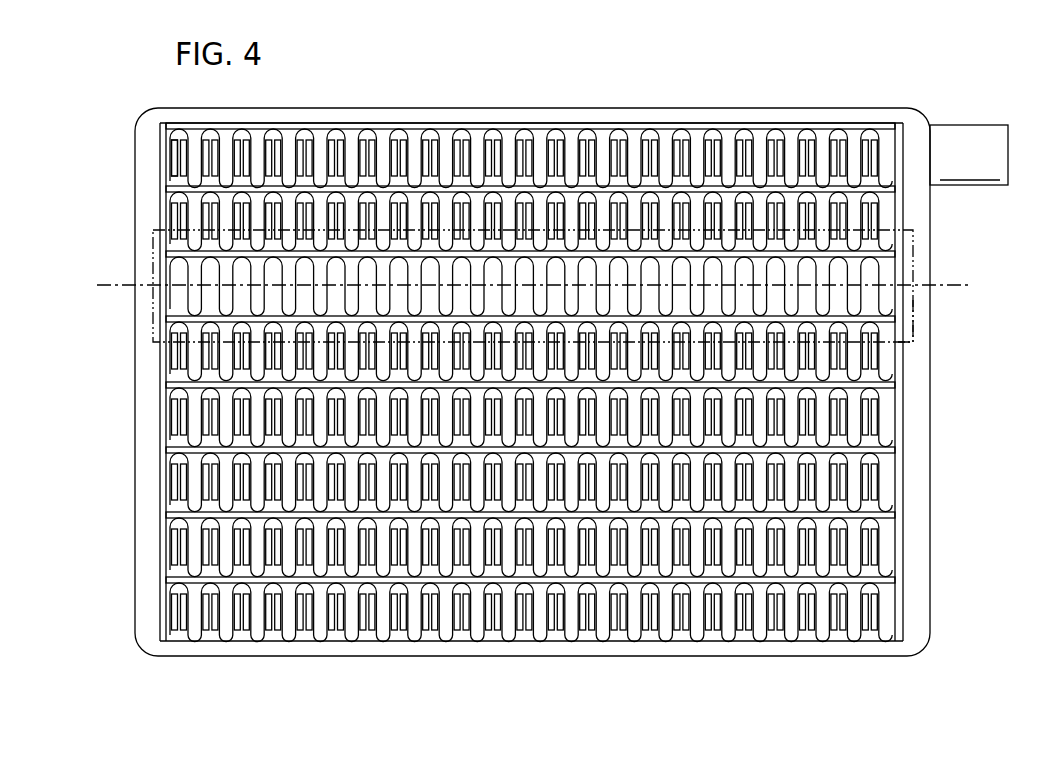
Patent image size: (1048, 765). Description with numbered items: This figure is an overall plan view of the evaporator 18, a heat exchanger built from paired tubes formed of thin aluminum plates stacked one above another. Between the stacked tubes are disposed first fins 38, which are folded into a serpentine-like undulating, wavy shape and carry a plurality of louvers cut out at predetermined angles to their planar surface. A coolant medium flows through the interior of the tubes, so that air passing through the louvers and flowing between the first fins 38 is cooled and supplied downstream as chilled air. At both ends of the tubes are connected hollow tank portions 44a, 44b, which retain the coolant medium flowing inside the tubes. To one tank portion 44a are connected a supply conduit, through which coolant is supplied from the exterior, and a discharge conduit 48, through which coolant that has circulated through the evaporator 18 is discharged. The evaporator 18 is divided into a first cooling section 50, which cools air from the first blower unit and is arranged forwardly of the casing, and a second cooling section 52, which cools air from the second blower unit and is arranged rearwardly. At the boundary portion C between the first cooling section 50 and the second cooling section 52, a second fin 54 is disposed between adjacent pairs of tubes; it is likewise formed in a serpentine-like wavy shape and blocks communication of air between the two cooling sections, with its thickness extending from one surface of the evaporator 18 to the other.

The evaporator 18 is at (822, 93).
The first fins 38 is at (223, 185).
The discharge conduit 48 is at (175, 158).
The second cooling section 52 is at (598, 218).
The second fin 54 is at (850, 292).
The tank portion 44a is at (917, 424).
The tank portion 44b is at (148, 440).
The first cooling section 50 is at (600, 555).
The boundary portion C is at (105, 290).